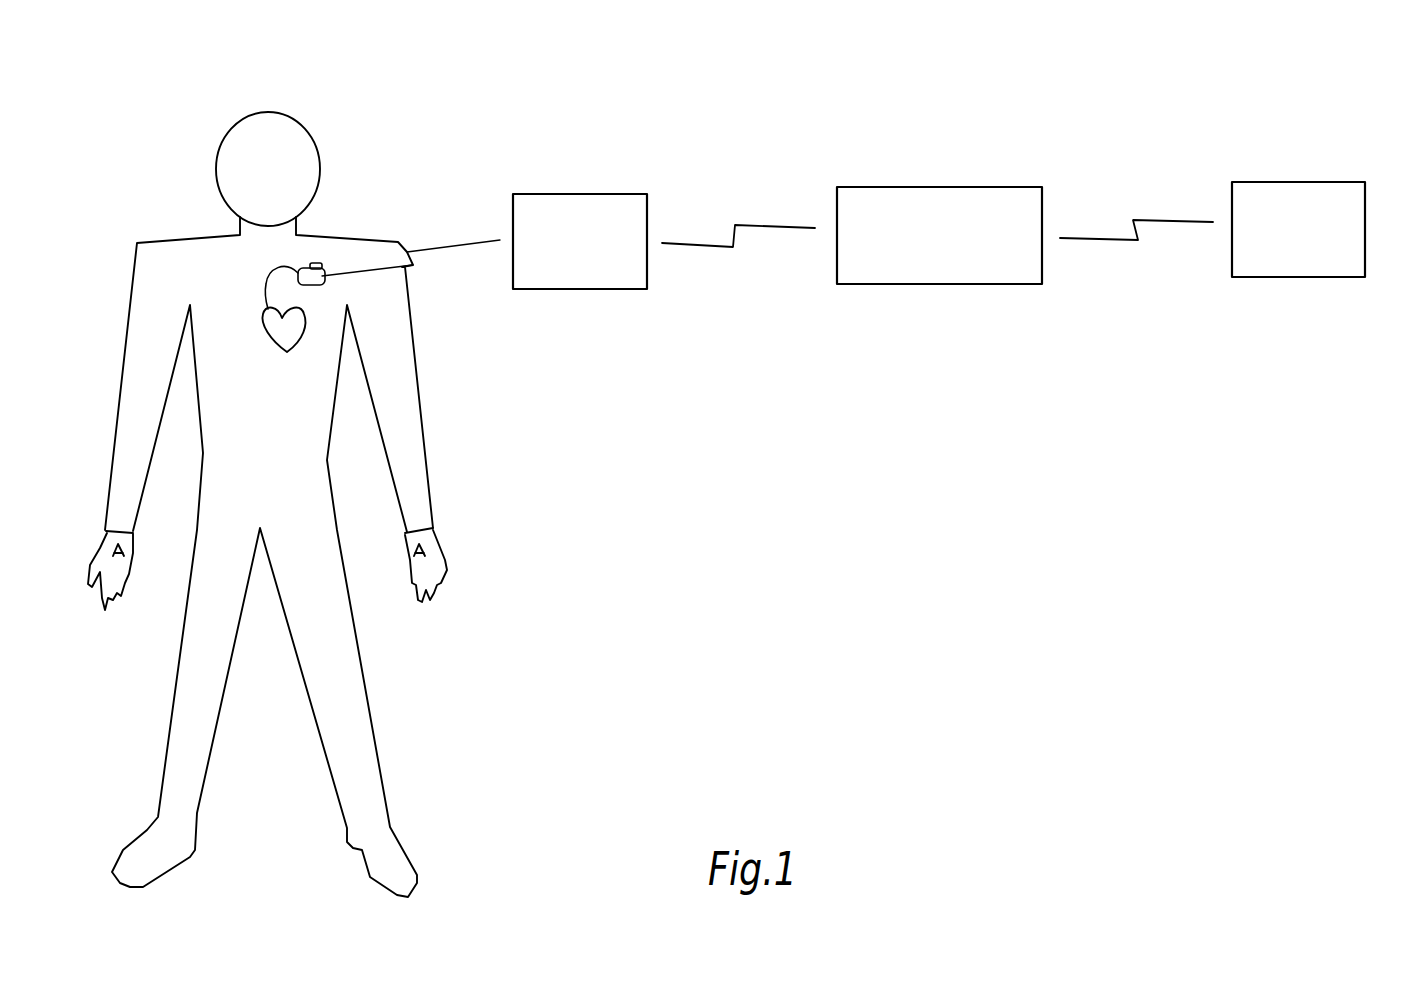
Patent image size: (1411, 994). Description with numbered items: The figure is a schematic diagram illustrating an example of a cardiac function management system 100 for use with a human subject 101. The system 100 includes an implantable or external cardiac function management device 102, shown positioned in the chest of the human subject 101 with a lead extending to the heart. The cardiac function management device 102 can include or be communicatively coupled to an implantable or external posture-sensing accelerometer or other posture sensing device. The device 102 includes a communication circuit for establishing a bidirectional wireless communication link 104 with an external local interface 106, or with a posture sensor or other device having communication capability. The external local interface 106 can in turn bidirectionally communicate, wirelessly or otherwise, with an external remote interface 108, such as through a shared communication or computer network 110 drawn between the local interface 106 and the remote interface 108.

The cardiac function management system 100 is at (147, 50).
The human subject 101 is at (135, 287).
The cardiac function management device 102 is at (322, 283).
The bidirectional wireless communication link 104 is at (472, 237).
The external local interface 106 is at (648, 214).
The external remote interface 108 is at (1365, 204).
The communication or computer network 110 is at (1043, 207).